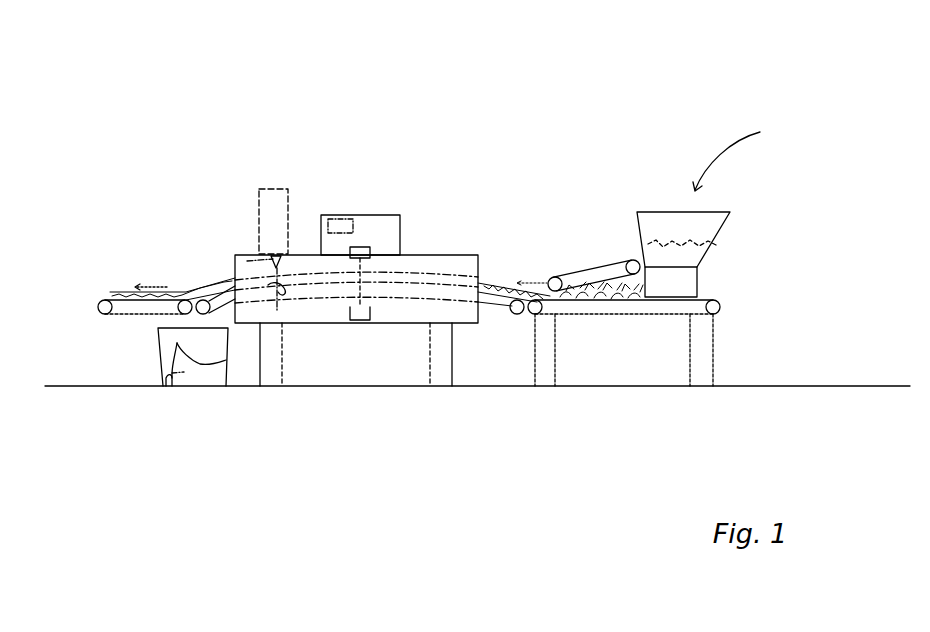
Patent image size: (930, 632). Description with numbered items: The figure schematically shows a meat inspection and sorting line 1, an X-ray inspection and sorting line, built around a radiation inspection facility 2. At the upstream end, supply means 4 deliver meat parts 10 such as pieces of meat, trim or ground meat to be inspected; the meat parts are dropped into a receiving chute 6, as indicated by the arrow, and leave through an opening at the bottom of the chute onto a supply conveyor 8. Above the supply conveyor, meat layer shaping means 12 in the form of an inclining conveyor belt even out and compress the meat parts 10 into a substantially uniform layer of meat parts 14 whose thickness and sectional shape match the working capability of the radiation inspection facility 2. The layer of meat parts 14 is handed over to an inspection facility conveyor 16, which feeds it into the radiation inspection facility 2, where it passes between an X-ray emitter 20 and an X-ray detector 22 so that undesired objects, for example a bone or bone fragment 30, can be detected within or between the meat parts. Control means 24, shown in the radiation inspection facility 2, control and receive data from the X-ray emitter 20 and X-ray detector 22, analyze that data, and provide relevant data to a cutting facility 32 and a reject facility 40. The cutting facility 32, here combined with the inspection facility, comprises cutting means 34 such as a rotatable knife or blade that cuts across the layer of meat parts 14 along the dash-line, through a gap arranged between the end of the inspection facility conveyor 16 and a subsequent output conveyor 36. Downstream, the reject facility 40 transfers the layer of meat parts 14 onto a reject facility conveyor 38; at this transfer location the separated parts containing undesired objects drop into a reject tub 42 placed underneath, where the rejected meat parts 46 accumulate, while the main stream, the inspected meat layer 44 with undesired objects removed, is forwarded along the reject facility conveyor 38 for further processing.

The meat inspection and sorting line 1 is at (507, 130).
The radiation inspection facility 2 is at (415, 254).
The supply means 4 is at (623, 201).
The receiving chute 6 is at (722, 227).
The supply conveyor 8 is at (673, 314).
The meat parts 10 is at (613, 305).
The meat layer shaping means 12 is at (590, 267).
The layer or stream of meat parts 14 is at (483, 290).
The inspection facility conveyor 16 is at (505, 308).
The X-ray emitter 20 is at (360, 247).
The X-ray detector 22 is at (371, 321).
The control means 24 is at (327, 213).
The bone or bone fragment 30 is at (312, 280).
The cutting facility 32 is at (229, 226).
The cutting means 34 is at (247, 260).
The output conveyor 36 is at (253, 303).
The reject facility conveyor 38 is at (116, 315).
The reject facility 40 is at (180, 266).
The reject tub 42 is at (158, 347).
The inspected meat layer 44 is at (128, 288).
The rejected meat parts 46 is at (184, 373).